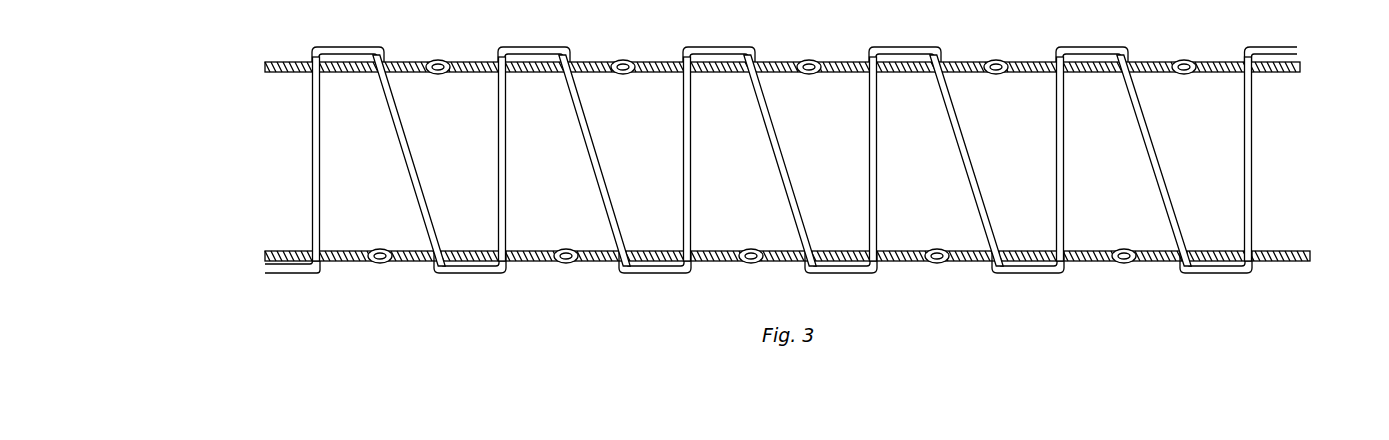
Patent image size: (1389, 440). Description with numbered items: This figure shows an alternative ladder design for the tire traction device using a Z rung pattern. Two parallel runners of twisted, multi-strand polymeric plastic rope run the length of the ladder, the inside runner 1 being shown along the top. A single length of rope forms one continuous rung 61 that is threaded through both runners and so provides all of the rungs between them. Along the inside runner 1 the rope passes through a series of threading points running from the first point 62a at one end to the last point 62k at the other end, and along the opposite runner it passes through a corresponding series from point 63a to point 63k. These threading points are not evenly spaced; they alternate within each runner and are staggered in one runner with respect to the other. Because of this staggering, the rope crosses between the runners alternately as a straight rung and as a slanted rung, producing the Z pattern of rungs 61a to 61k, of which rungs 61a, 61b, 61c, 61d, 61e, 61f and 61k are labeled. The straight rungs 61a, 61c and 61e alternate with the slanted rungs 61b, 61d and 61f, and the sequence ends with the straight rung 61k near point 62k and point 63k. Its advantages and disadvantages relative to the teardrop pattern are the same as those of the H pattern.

The inside runner 1 is at (401, 60).
The continuous rung 61 is at (768, 142).
The rung 61a is at (312, 180).
The rung 61b is at (408, 182).
The rung 61c is at (498, 120).
The rung 61d is at (580, 122).
The rung 61e is at (683, 120).
The rung 61f is at (766, 122).
The rung 61k is at (1252, 162).
The point along inside runner 62a is at (300, 78).
The point along inside runner 62k is at (1270, 76).
The point along outside runner 63a is at (299, 248).
The point along outside runner 63k is at (1277, 237).